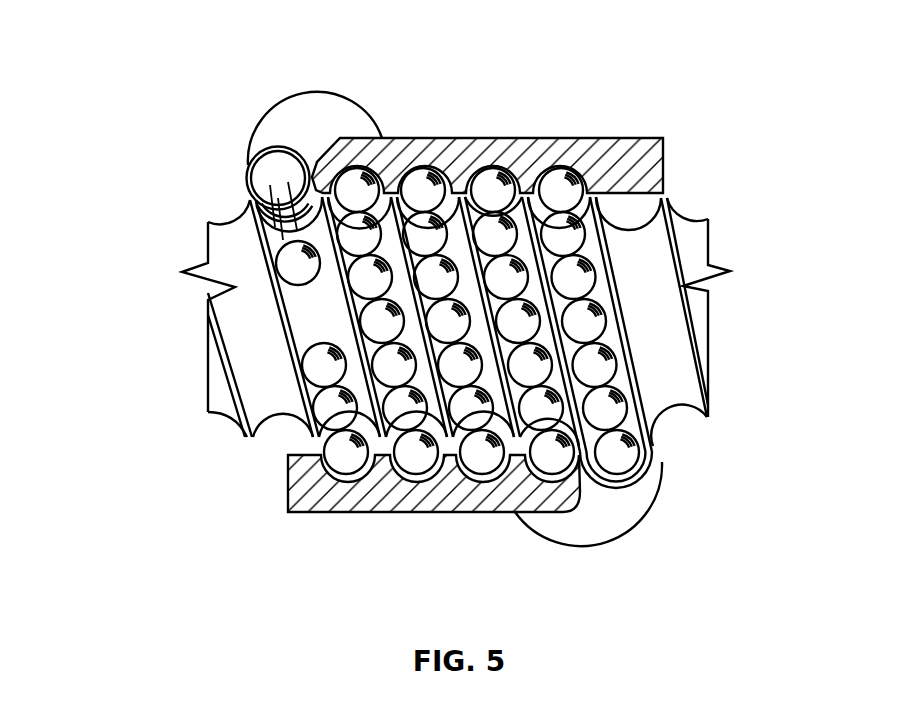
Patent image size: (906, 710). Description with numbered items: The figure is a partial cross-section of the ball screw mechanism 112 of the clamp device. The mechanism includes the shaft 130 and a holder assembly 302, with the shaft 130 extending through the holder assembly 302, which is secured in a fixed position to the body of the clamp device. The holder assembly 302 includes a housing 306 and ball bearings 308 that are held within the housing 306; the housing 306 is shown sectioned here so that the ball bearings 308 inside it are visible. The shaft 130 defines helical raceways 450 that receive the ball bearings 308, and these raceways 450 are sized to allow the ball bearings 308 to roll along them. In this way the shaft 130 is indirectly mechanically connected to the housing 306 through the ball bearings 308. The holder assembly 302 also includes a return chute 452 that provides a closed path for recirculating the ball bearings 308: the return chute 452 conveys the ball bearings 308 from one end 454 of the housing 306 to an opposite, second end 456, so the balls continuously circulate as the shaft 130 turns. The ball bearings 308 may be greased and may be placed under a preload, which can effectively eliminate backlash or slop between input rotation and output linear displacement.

The ball screw mechanism 112 is at (118, 140).
The shaft 130 is at (638, 265).
The holder assembly 302 is at (677, 155).
The housing 306 is at (595, 160).
The ball bearings 308 is at (422, 177).
The helical raceways 450 is at (278, 370).
The return chute 452 is at (307, 112).
The end of the housing 454 is at (665, 462).
The second end of the housing 456 is at (247, 171).